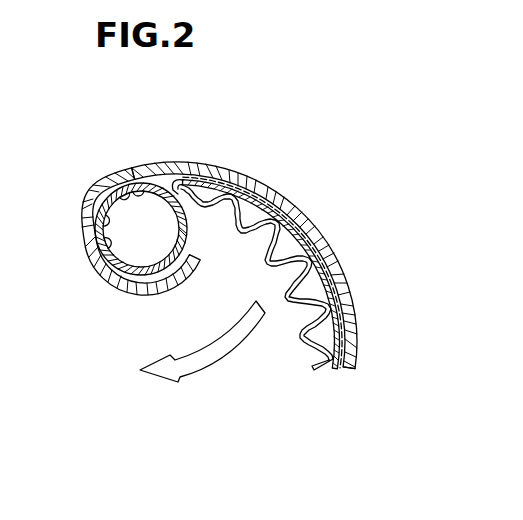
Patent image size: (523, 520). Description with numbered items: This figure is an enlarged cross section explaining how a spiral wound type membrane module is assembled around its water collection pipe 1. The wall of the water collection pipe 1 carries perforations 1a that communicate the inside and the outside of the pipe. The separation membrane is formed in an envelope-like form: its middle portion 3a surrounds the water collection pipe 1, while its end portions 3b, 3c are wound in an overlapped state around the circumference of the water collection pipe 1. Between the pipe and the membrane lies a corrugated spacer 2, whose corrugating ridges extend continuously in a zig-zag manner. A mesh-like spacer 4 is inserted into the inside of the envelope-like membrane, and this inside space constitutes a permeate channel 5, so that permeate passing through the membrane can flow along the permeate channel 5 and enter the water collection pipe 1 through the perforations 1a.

The water collection pipe 1 is at (130, 268).
The perforations 1a is at (123, 186).
The corrugated spacer 2 is at (291, 298).
The middle portion 3a is at (203, 253).
The end portion 3b is at (333, 366).
The end portion 3c is at (363, 367).
The mesh-like spacer 4 is at (294, 200).
The permeate channel 5 is at (249, 254).